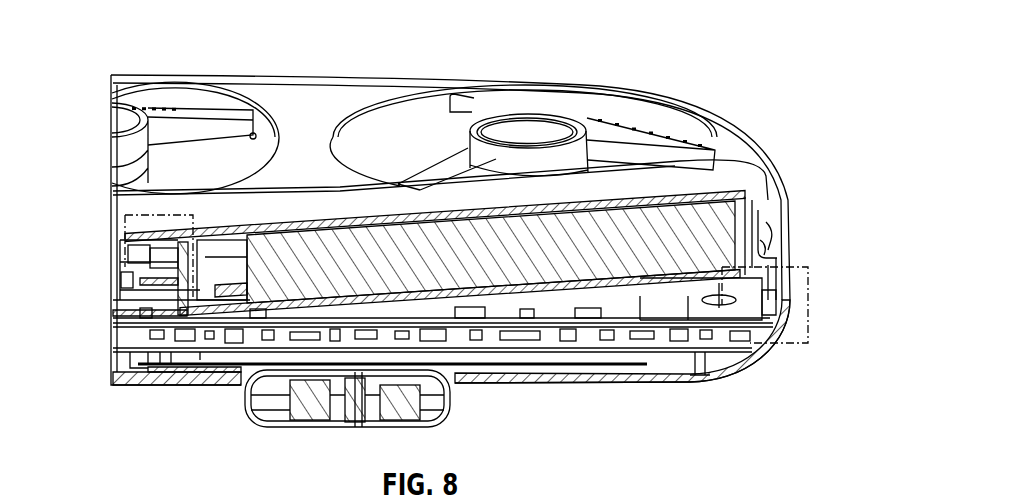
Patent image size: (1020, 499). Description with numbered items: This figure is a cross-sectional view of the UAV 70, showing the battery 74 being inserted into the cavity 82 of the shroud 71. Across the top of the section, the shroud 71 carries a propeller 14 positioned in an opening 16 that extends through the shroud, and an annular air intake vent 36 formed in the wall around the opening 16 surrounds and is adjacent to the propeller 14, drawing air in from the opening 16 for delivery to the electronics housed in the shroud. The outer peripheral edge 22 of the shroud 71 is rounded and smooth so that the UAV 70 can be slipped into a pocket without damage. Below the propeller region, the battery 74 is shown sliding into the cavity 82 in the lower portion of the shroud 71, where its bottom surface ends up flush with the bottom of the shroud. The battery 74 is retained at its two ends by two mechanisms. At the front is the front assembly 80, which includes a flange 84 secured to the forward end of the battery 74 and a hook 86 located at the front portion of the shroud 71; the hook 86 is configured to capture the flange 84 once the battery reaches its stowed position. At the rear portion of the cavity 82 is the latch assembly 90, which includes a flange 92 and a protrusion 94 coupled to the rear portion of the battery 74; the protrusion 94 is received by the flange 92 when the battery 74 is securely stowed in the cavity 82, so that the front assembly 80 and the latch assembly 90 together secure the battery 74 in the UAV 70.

The UAV 70 is at (107, 40).
The shroud 71 is at (291, 95).
The air intake vent 36 is at (167, 107).
The opening 16 is at (403, 152).
The propeller 14 is at (541, 125).
The battery 74 is at (692, 208).
The peripheral edge 22 is at (752, 148).
The flange 84 is at (767, 250).
The front assembly 80 is at (815, 283).
The hook 86 is at (770, 304).
The cavity 82 is at (660, 312).
The latch assembly 90 is at (119, 221).
The flange 92 is at (139, 232).
The protrusion 94 is at (146, 247).